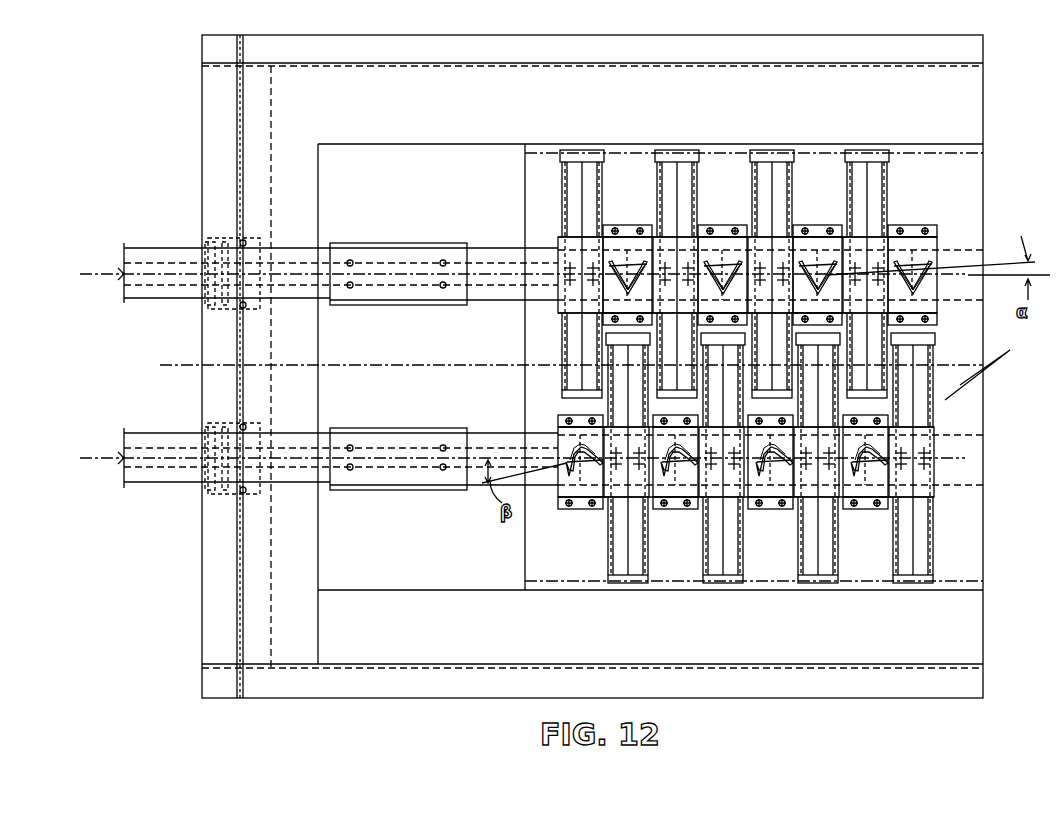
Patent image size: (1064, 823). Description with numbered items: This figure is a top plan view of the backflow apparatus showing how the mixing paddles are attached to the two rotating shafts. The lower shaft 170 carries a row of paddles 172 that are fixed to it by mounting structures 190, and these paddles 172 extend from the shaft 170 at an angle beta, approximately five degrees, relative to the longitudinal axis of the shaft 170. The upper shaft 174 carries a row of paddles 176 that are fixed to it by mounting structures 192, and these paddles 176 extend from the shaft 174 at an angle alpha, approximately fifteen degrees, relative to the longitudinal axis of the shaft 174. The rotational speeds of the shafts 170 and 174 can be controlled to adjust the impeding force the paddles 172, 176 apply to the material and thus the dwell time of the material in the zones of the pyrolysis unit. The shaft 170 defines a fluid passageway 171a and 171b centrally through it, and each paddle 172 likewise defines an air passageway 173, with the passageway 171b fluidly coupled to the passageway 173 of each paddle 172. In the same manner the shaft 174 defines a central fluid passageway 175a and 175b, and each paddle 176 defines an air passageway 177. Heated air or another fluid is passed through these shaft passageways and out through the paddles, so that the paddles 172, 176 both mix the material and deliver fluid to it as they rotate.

The shaft 170 is at (162, 484).
The fluid passageway 171a is at (153, 447).
The fluid passageway 171b is at (499, 432).
The paddles 172 is at (728, 492).
The air passageways 173 is at (607, 565).
The shaft 174 is at (164, 247).
The fluid passageway 175a is at (157, 284).
The fluid passageway 175b is at (501, 247).
The paddles 176 is at (710, 245).
The air passageways 177 is at (566, 178).
The mounting structures 190 is at (663, 460).
The mounting structures 192 is at (926, 272).